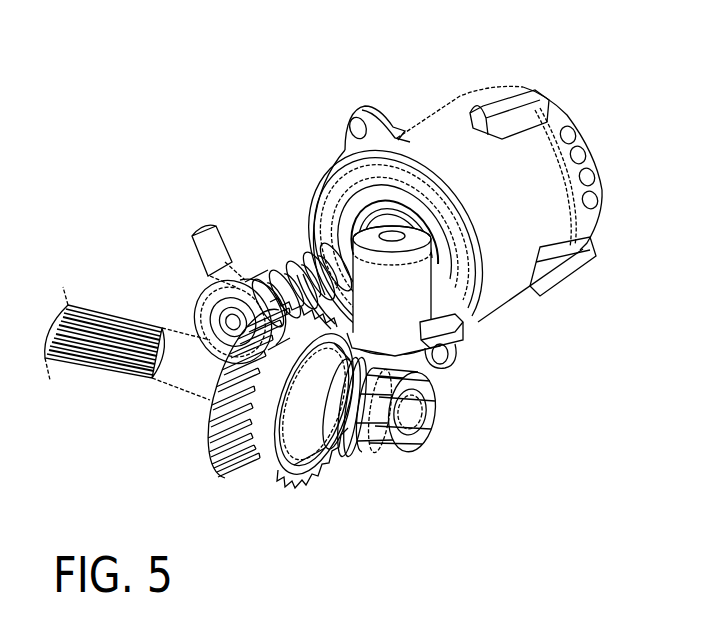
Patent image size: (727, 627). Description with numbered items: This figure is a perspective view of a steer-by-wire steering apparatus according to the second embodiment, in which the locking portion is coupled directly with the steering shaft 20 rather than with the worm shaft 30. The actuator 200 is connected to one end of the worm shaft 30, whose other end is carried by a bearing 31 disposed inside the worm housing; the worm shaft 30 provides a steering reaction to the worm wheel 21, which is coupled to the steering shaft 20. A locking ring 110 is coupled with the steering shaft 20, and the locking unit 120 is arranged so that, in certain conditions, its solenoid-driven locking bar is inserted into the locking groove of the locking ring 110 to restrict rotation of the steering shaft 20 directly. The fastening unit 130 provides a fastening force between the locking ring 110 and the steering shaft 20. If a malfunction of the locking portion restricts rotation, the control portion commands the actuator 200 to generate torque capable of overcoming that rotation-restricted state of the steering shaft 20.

The actuator 200 is at (467, 103).
The steering shaft 20 is at (93, 368).
The worm wheel 21 is at (248, 453).
The worm shaft 30 is at (297, 268).
The bearing 31 is at (240, 277).
The locking ring 110 is at (395, 414).
The locking unit 120 is at (432, 300).
The fastening unit 130 is at (397, 400).